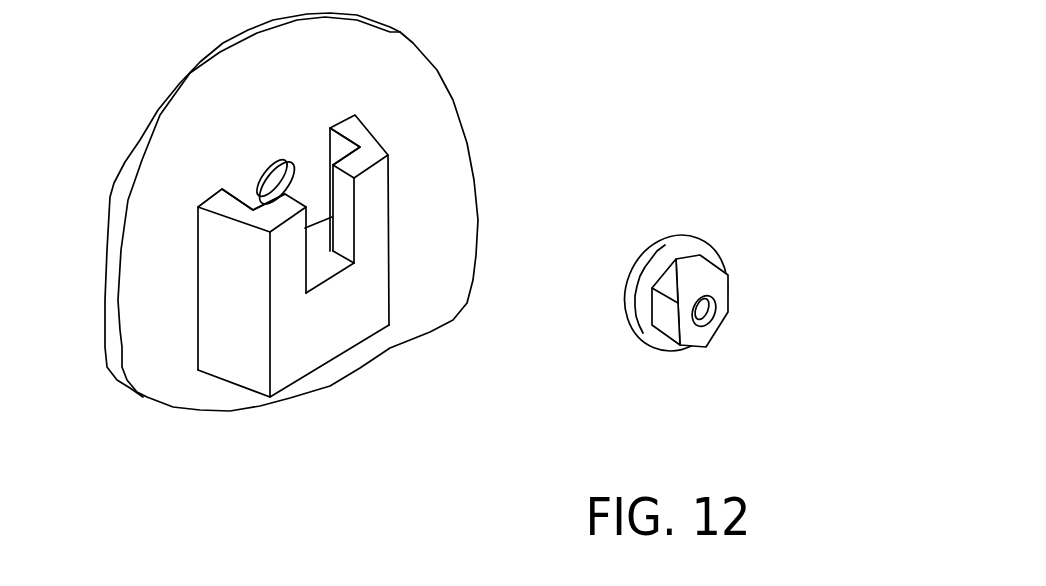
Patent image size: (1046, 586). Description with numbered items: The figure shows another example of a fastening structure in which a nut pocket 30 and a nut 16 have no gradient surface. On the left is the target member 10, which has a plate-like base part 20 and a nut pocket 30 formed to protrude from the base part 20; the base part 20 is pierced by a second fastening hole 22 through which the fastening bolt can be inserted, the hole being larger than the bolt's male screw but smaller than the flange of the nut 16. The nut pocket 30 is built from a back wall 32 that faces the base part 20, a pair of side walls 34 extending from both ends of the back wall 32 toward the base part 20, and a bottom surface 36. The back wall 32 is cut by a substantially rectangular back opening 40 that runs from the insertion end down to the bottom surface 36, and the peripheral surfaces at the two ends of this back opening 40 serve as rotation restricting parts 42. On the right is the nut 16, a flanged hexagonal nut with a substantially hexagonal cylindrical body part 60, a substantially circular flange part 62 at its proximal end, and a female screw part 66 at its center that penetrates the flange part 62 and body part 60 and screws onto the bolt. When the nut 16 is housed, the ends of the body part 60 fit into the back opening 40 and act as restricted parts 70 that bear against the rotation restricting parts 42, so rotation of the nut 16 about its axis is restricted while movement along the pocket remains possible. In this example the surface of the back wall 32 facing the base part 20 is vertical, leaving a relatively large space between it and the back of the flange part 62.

The target member 10 is at (326, 273).
The nut 16 is at (744, 305).
The base part 20 is at (346, 212).
The second fastening hole 22 is at (290, 166).
The nut pocket 30 is at (252, 350).
The back wall 32 is at (353, 341).
The side walls 34 is at (164, 264).
The bottom surface 36 is at (384, 346).
The back opening 40 is at (470, 220).
The rotation restricting parts 42 is at (470, 184).
The body part 60 is at (698, 259).
The flange part 62 is at (676, 329).
The female screw part 66 is at (727, 296).
The restricted parts 70 is at (667, 205).